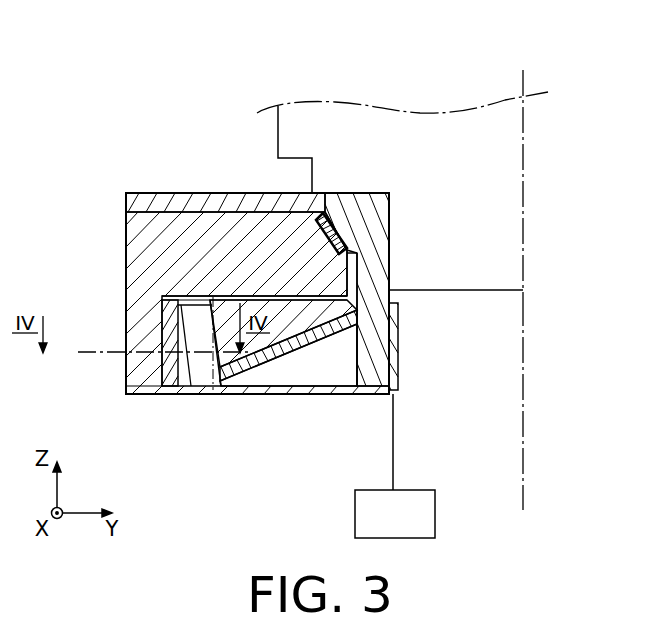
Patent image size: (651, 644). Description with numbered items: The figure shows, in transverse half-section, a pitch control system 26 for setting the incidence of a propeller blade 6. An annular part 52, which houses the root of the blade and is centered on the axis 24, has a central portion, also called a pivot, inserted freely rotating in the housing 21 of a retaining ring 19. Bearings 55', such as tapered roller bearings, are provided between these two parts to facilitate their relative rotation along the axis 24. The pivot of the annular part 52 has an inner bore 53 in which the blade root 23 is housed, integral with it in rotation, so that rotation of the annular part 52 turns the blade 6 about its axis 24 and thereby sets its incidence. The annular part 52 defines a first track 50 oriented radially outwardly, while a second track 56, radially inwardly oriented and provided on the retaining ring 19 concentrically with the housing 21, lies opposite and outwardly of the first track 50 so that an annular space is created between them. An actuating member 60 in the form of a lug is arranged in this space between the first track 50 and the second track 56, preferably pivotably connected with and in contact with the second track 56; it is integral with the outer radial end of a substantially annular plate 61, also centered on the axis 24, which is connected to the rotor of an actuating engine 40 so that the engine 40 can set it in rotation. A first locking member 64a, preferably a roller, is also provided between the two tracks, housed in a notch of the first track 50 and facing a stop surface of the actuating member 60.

The pitch control system 26 is at (102, 62).
The blade 6 is at (518, 130).
The retaining ring 19 is at (161, 216).
The bearings 55' is at (283, 266).
The annular part 52 is at (389, 205).
The housing 21 is at (357, 267).
The inner bore 53 is at (389, 272).
The blade root 23 is at (524, 257).
The first track 50 is at (200, 298).
The actuating member 60 is at (165, 326).
The annular plate 61 is at (398, 352).
The first locking member 64a is at (197, 396).
The second track 56 is at (168, 396).
The axis 24 is at (524, 498).
The actuating engine 40 is at (435, 527).